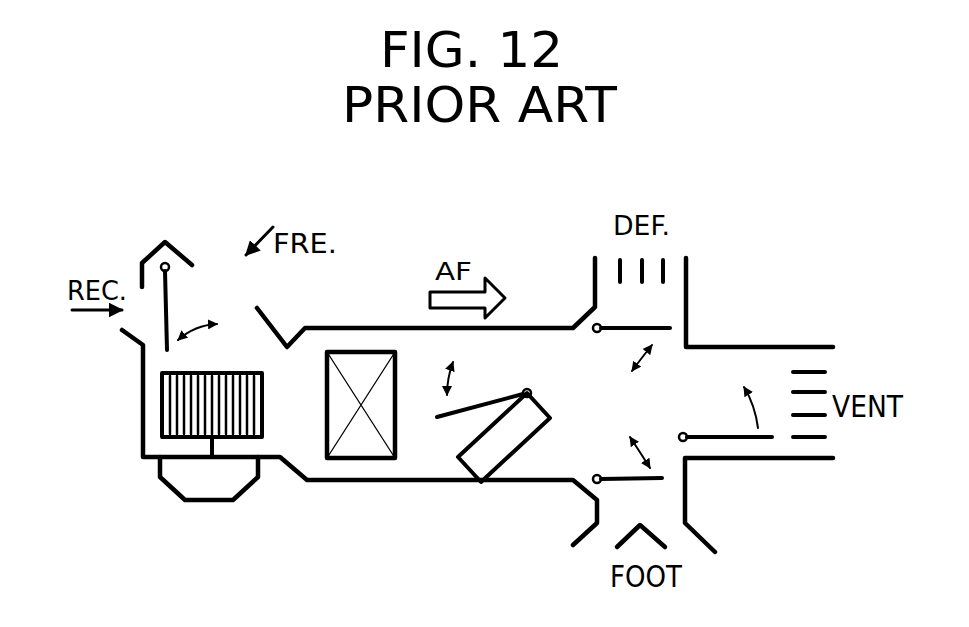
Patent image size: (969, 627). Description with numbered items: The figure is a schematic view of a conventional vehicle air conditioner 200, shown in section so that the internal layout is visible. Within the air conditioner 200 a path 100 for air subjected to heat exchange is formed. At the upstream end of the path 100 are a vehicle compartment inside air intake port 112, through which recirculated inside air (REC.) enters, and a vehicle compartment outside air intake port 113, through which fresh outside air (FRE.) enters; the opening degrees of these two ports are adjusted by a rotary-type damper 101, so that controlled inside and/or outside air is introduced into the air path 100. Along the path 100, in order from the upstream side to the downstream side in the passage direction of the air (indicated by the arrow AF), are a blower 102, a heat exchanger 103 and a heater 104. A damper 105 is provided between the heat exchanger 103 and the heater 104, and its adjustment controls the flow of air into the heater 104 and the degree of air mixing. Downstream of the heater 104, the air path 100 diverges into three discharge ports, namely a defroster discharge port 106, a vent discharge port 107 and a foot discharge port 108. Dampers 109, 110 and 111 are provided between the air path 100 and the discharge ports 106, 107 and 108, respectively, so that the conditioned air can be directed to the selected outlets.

The path for air subjected to heat exchange 100 is at (613, 392).
The rotary-type damper 101 is at (170, 302).
The blower 102 is at (160, 413).
The heat exchanger 103 is at (358, 448).
The heater 104 is at (500, 447).
The damper 105 is at (473, 403).
The discharge port 106 is at (660, 298).
The discharge port 107 is at (782, 418).
The discharge port 108 is at (653, 502).
The damper 109 is at (653, 330).
The damper 110 is at (753, 438).
The damper 111 is at (623, 475).
The vehicle compartment inside air intake port 112 is at (117, 322).
The vehicle compartment outside air intake port 113 is at (245, 308).
The air conditioner 200 is at (415, 310).